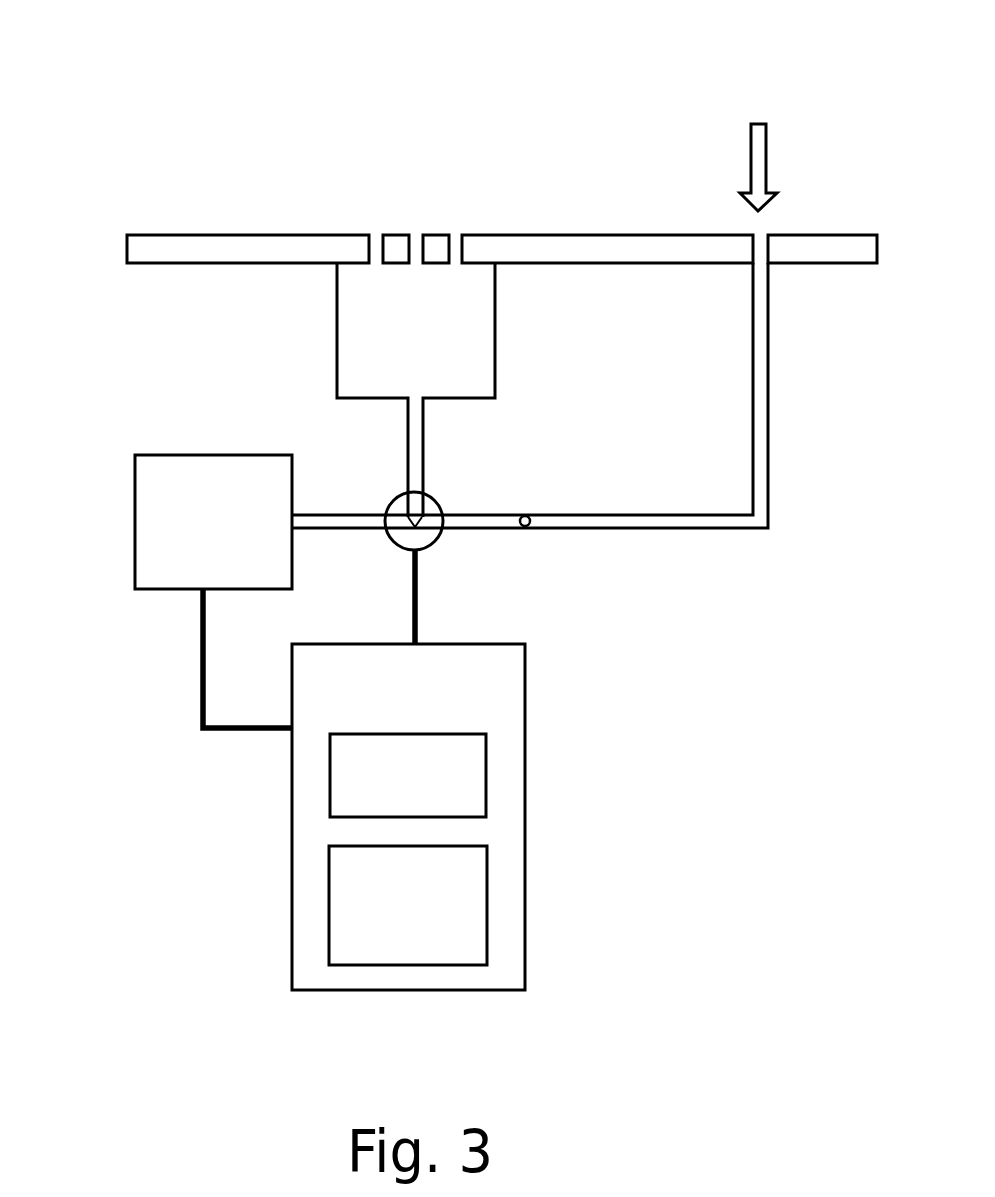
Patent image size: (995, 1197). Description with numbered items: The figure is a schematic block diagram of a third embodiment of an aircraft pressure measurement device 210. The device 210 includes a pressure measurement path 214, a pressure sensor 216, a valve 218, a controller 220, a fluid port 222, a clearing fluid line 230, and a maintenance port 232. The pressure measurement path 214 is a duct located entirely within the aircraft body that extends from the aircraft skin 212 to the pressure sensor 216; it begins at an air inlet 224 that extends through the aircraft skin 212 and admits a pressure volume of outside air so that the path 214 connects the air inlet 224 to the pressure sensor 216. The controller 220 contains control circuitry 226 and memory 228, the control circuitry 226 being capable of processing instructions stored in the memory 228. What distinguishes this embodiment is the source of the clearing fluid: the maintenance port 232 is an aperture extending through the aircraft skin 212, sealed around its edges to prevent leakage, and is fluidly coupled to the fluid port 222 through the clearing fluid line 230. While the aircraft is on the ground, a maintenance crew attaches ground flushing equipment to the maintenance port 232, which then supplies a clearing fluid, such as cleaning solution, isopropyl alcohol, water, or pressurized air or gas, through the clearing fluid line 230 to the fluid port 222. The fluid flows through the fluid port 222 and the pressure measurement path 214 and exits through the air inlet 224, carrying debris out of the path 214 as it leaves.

The aircraft pressure measurement device 210 is at (146, 125).
The aircraft skin 212 is at (562, 248).
The pressure measurement path 214 is at (413, 433).
The pressure sensor 216 is at (166, 520).
The valve 218 is at (435, 541).
The controller 220 is at (408, 770).
The fluid port 222 is at (525, 515).
The air inlet 224 is at (414, 248).
The control circuitry 226 is at (408, 905).
The memory 228 is at (408, 775).
The clearing fluid line 230 is at (655, 522).
The maintenance port 232 is at (760, 237).